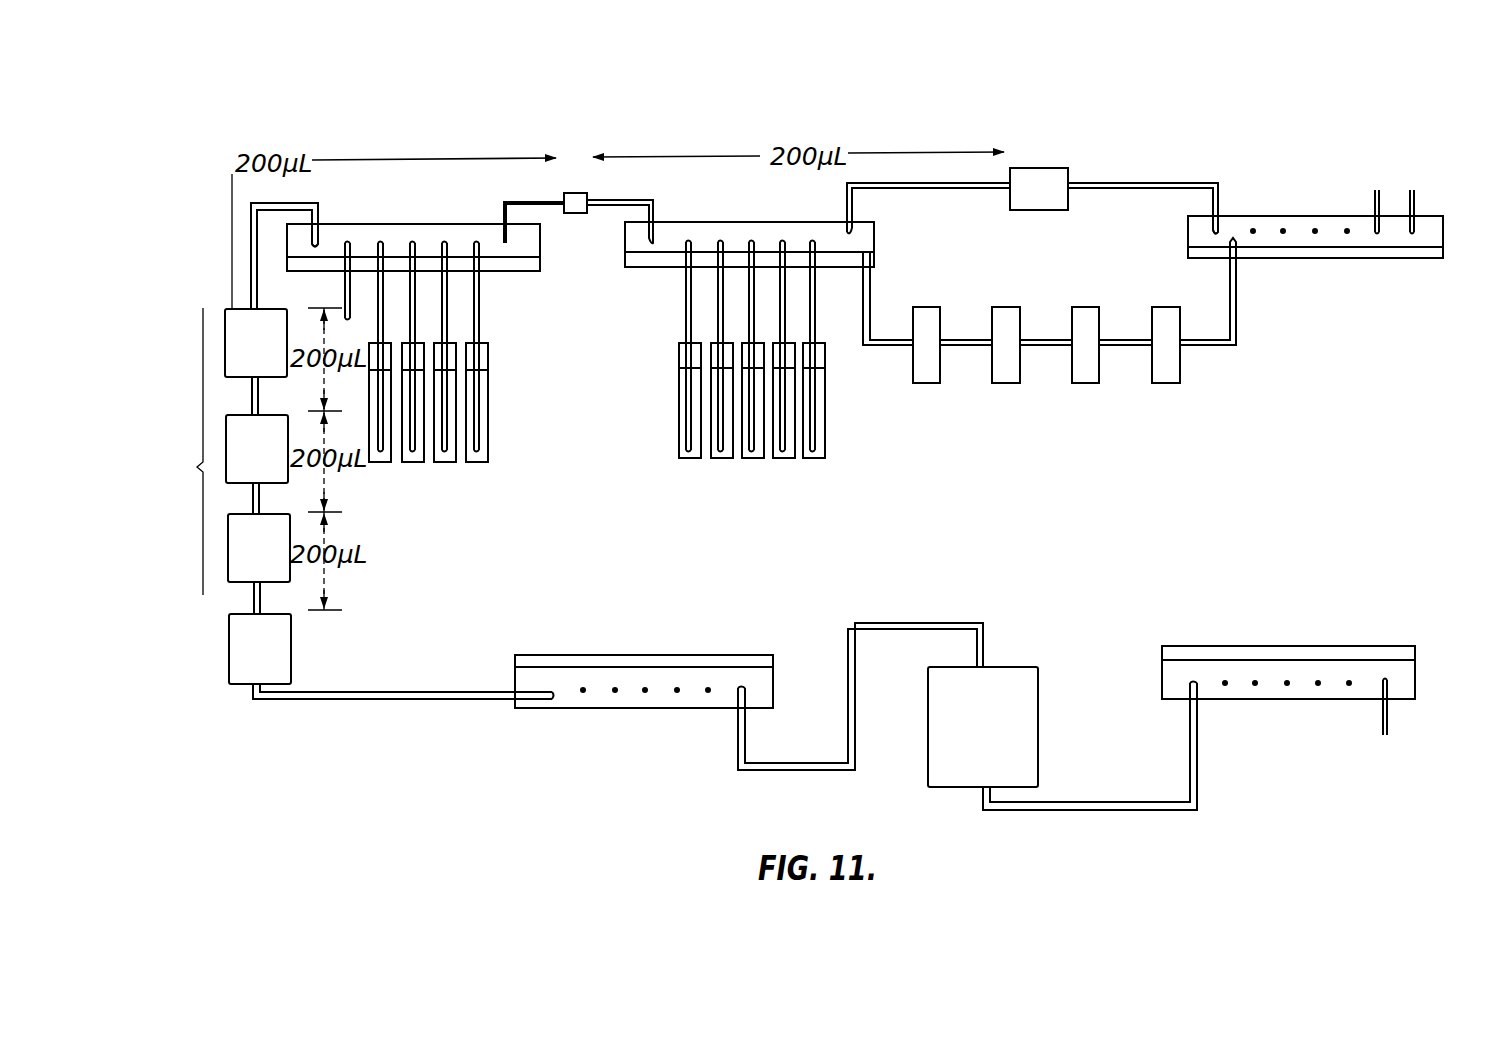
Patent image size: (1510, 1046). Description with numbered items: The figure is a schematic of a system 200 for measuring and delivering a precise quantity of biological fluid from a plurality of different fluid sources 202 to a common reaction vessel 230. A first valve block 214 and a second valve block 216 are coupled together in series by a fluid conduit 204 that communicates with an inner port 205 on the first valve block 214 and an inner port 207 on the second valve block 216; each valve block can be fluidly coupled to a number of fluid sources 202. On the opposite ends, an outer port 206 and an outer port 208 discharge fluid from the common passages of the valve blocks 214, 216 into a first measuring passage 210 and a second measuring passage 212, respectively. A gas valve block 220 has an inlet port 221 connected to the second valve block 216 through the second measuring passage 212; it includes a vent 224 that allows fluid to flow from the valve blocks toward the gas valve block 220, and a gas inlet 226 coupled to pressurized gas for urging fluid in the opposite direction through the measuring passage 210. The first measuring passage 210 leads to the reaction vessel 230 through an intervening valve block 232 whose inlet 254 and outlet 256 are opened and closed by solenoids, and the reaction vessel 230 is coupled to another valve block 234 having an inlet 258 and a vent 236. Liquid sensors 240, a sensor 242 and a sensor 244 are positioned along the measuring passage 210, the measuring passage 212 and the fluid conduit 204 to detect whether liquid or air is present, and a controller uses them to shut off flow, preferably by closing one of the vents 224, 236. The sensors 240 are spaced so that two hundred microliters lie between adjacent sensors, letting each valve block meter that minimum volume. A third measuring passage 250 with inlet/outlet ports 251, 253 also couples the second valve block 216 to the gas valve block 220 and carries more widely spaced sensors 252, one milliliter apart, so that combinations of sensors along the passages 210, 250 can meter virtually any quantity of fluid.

The system 200 is at (350, 111).
The fluid sources 202 is at (492, 414).
The fluid conduit 204 is at (654, 199).
The inner port 205 is at (507, 244).
The outer port 206 is at (320, 240).
The inner port 207 is at (648, 243).
The outer port 208 is at (876, 232).
The first measuring passage 210 is at (257, 283).
The second measuring passage 212 is at (1146, 183).
The first valve block 214 is at (470, 220).
The second valve block 216 is at (820, 212).
The gas valve block 220 is at (1436, 272).
The inlet port 221 is at (1222, 231).
The vent 224 is at (1374, 231).
The gas inlet 226 is at (1415, 231).
The reaction vessel 230 is at (1020, 658).
The valve block 232 is at (678, 645).
The valve block 234 is at (1278, 640).
The vent 236 is at (1390, 686).
The liquid sensors 240 is at (219, 496).
The sensor 242 is at (578, 194).
The sensor 244 is at (1056, 169).
The third measuring passage 250 is at (1238, 337).
The inlet/outlet port 251 is at (1228, 252).
The sensors 252 is at (1097, 307).
The inlet/outlet port 253 is at (874, 258).
The inlet 254 is at (552, 708).
The outlet 256 is at (736, 694).
The inlet 258 is at (1189, 697).